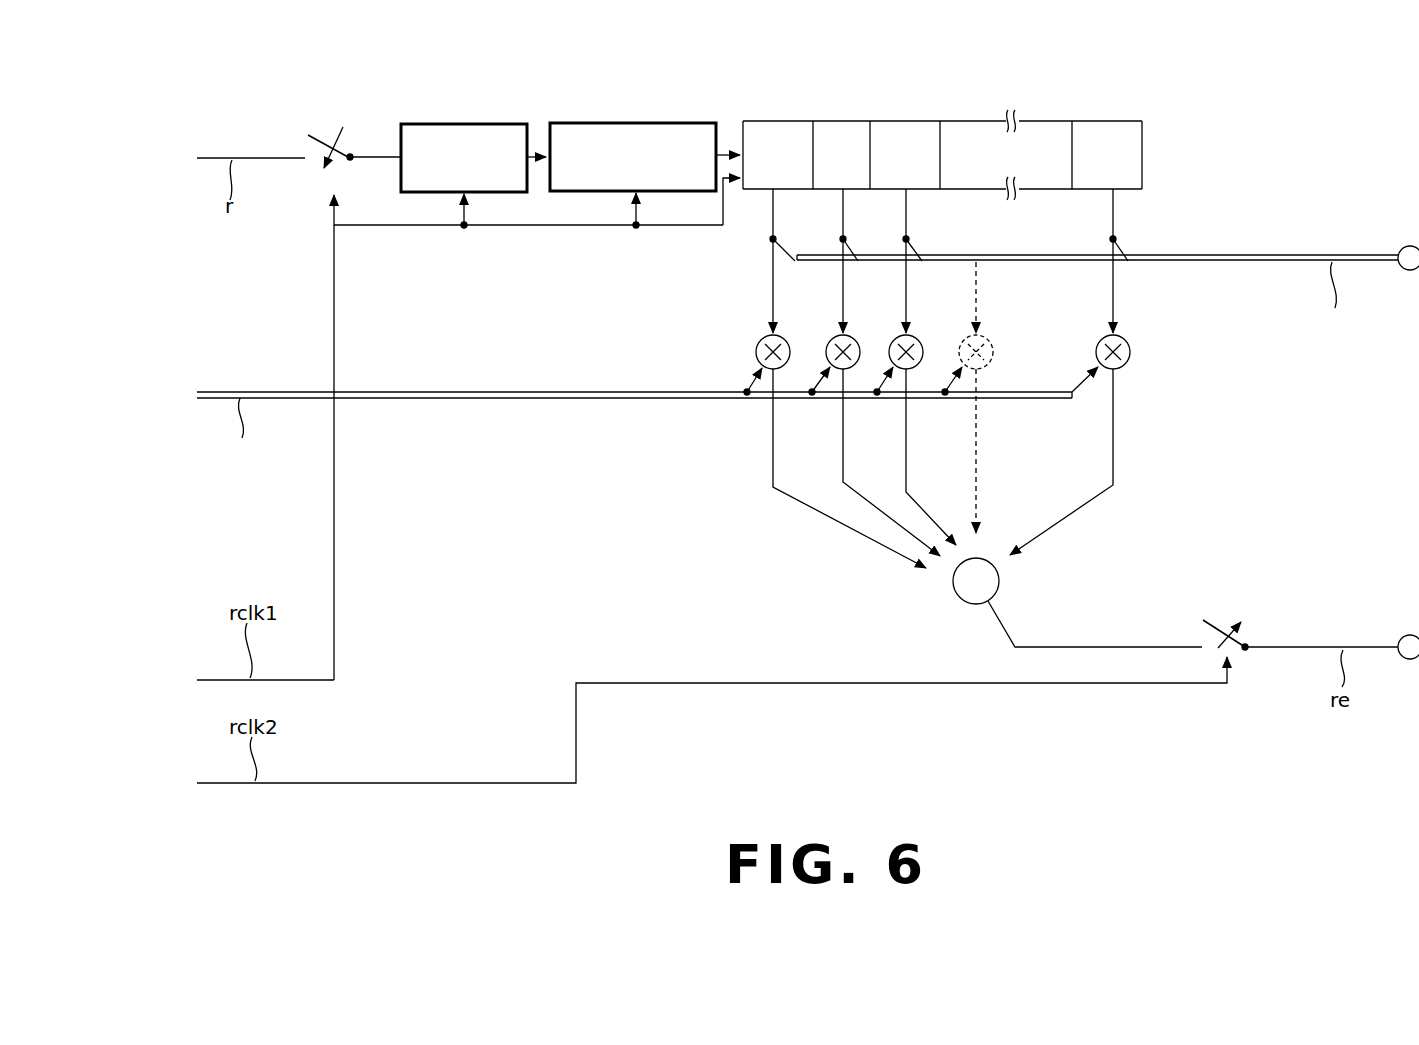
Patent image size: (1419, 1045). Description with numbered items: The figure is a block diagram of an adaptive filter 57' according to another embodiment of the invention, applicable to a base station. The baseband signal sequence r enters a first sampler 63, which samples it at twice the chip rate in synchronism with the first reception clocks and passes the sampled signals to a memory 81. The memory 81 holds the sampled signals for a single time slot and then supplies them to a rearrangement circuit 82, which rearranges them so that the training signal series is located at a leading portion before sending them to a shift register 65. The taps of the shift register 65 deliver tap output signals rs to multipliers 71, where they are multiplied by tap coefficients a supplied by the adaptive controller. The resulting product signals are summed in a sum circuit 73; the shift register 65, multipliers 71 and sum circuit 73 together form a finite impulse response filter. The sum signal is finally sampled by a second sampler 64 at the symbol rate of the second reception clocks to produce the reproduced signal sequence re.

The first sampler 63 is at (337, 122).
The memory 81 is at (492, 122).
The rearrangement circuit 82 is at (645, 120).
The adaptive filter 57' is at (808, 323).
The shift register 65 is at (910, 115).
The multipliers 71 is at (1130, 352).
The sum circuit 73 is at (953, 582).
The second sampler 64 is at (1252, 618).